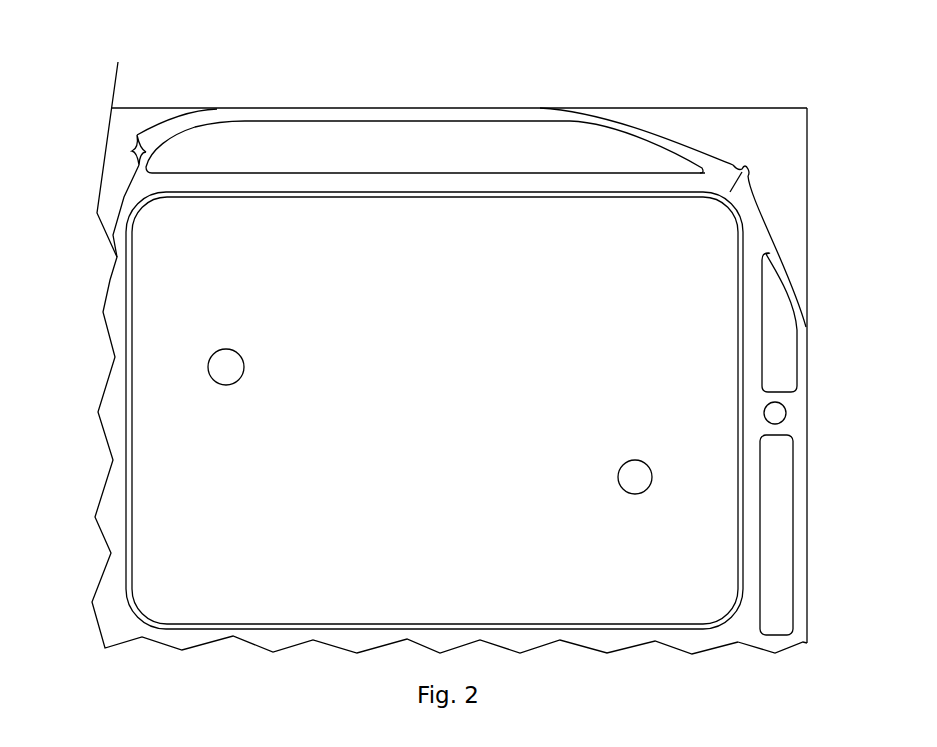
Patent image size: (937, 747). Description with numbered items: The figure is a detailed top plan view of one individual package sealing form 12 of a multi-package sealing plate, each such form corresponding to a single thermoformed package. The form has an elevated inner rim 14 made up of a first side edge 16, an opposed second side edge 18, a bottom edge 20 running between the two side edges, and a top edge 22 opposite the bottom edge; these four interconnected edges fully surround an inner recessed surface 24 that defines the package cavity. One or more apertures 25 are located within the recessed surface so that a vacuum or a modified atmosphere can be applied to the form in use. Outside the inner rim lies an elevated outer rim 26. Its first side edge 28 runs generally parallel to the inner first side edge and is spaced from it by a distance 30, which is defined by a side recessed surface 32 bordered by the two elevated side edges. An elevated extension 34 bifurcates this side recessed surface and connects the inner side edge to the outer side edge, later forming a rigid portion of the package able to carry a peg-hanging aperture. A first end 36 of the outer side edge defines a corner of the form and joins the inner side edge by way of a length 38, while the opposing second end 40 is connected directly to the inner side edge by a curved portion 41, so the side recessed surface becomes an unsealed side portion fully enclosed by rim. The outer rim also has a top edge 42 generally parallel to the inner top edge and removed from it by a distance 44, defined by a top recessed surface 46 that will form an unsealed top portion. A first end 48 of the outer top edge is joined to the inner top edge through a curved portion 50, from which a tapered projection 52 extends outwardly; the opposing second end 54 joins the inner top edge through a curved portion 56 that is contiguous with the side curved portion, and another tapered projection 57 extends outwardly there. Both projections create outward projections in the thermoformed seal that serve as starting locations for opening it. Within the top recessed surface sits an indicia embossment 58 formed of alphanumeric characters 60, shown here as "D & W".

The package sealing form 12 is at (621, 72).
The elevated inner rim 14 is at (511, 622).
The first side edge 16 is at (738, 543).
The second side edge 18 is at (132, 500).
The bottom edge 20 is at (401, 627).
The top edge 22 is at (500, 196).
The inner recessed surface 24 is at (455, 392).
The apertures 25 is at (240, 382).
The elevated outer rim 26 is at (813, 453).
The first side edge 28 is at (806, 557).
The distance 30 is at (760, 662).
The side recessed surface 32 is at (785, 366).
The elevated extension 34 is at (786, 416).
The first end 36 is at (805, 641).
The length 38 is at (774, 647).
The second end 40 is at (768, 250).
The curved portion 41 is at (800, 303).
The top edge 42 is at (558, 118).
The distance 44 is at (817, 127).
The top recessed surface 46 is at (303, 140).
The first end 48 is at (138, 165).
The curved portion 50 is at (185, 126).
The tapered projection 52 is at (132, 151).
The second end 54 is at (717, 180).
The curved portion 56 is at (682, 148).
The tapered projection 57 is at (745, 165).
The indicia embossment 58 is at (526, 150).
The alphanumeric characters 60 is at (481, 140).